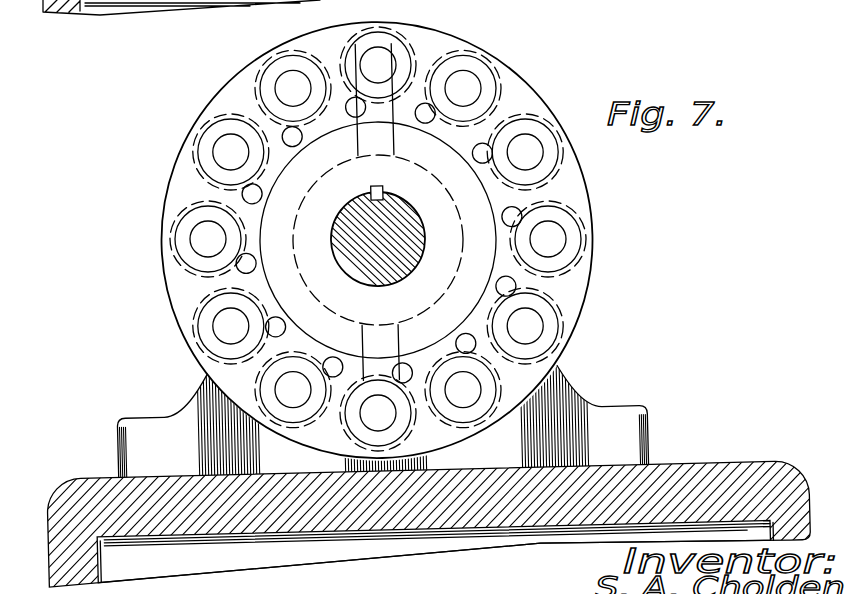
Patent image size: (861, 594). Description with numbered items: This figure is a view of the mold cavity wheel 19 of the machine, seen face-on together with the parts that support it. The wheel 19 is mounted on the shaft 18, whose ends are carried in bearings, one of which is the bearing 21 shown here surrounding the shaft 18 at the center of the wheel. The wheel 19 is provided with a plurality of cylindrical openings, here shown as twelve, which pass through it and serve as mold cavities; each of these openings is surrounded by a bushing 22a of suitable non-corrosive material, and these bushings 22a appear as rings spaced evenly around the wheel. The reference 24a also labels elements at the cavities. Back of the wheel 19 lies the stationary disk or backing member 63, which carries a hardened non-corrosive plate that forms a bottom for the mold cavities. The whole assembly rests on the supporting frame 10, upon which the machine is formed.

The supporting frame 10 is at (692, 465).
The stationary disk or backing member 63 is at (547, 385).
The mold cavity wheel 19 is at (512, 86).
The bushing 22a is at (537, 300).
The holes 24a is at (550, 223).
The bearing 21 is at (378, 240).
The shaft 18 is at (380, 230).